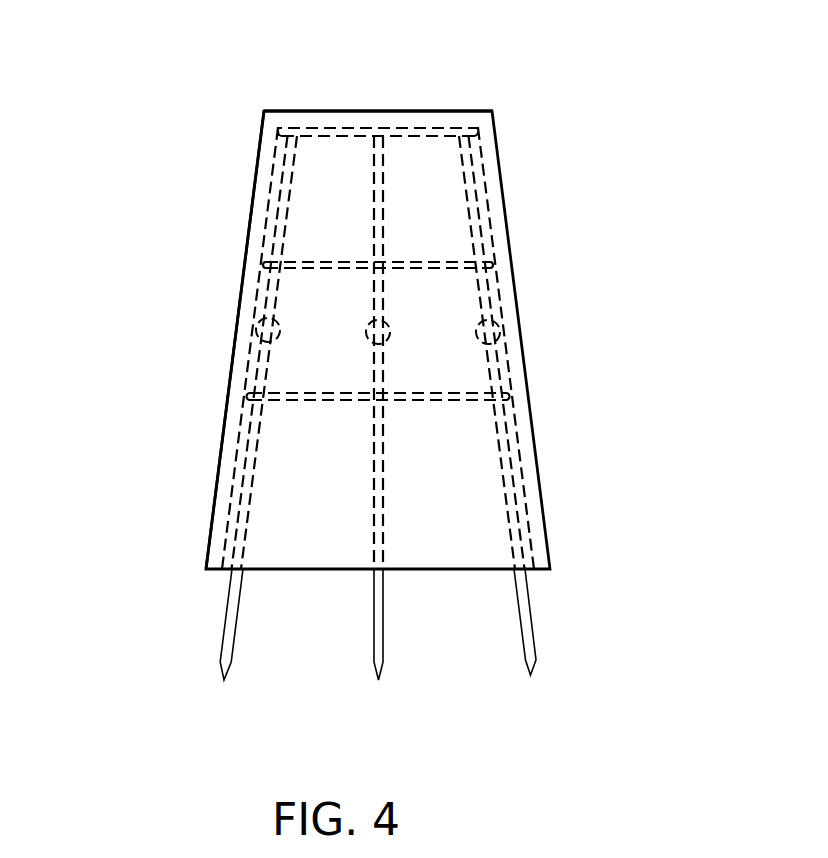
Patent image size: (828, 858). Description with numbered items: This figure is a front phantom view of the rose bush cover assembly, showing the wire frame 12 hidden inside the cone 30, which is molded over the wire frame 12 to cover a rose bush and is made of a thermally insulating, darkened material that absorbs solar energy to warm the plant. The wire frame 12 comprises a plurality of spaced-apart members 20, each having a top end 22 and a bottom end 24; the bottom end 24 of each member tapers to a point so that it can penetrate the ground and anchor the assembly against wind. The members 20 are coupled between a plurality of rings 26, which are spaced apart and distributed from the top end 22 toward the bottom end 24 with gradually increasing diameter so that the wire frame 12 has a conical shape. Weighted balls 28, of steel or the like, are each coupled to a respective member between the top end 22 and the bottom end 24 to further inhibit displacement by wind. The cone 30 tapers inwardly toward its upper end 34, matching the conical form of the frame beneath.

The wire frame 12 is at (372, 197).
The members 20 is at (243, 480).
The top end 22 is at (466, 137).
The bottom end 24 is at (530, 675).
The rings 26 is at (422, 127).
The balls 28 is at (267, 327).
The cone 30 is at (262, 128).
The upper end 34 is at (372, 111).